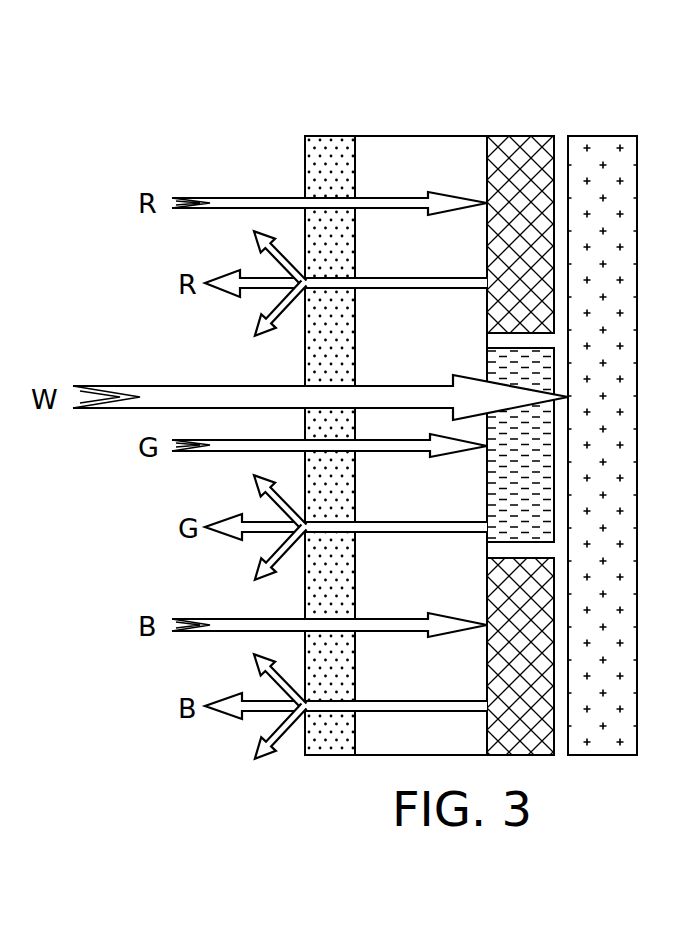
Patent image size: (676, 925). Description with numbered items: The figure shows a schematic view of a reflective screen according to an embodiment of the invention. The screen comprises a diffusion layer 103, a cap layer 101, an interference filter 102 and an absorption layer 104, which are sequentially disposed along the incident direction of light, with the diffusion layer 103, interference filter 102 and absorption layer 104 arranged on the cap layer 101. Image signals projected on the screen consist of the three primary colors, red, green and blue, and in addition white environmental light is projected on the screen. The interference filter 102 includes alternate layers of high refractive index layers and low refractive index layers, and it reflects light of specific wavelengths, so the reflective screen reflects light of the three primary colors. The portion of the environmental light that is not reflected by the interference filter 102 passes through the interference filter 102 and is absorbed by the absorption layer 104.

The cap layer 101 is at (414, 152).
The interference filter 102 is at (516, 152).
The diffusion layer 103 is at (328, 152).
The absorption layer 104 is at (602, 152).